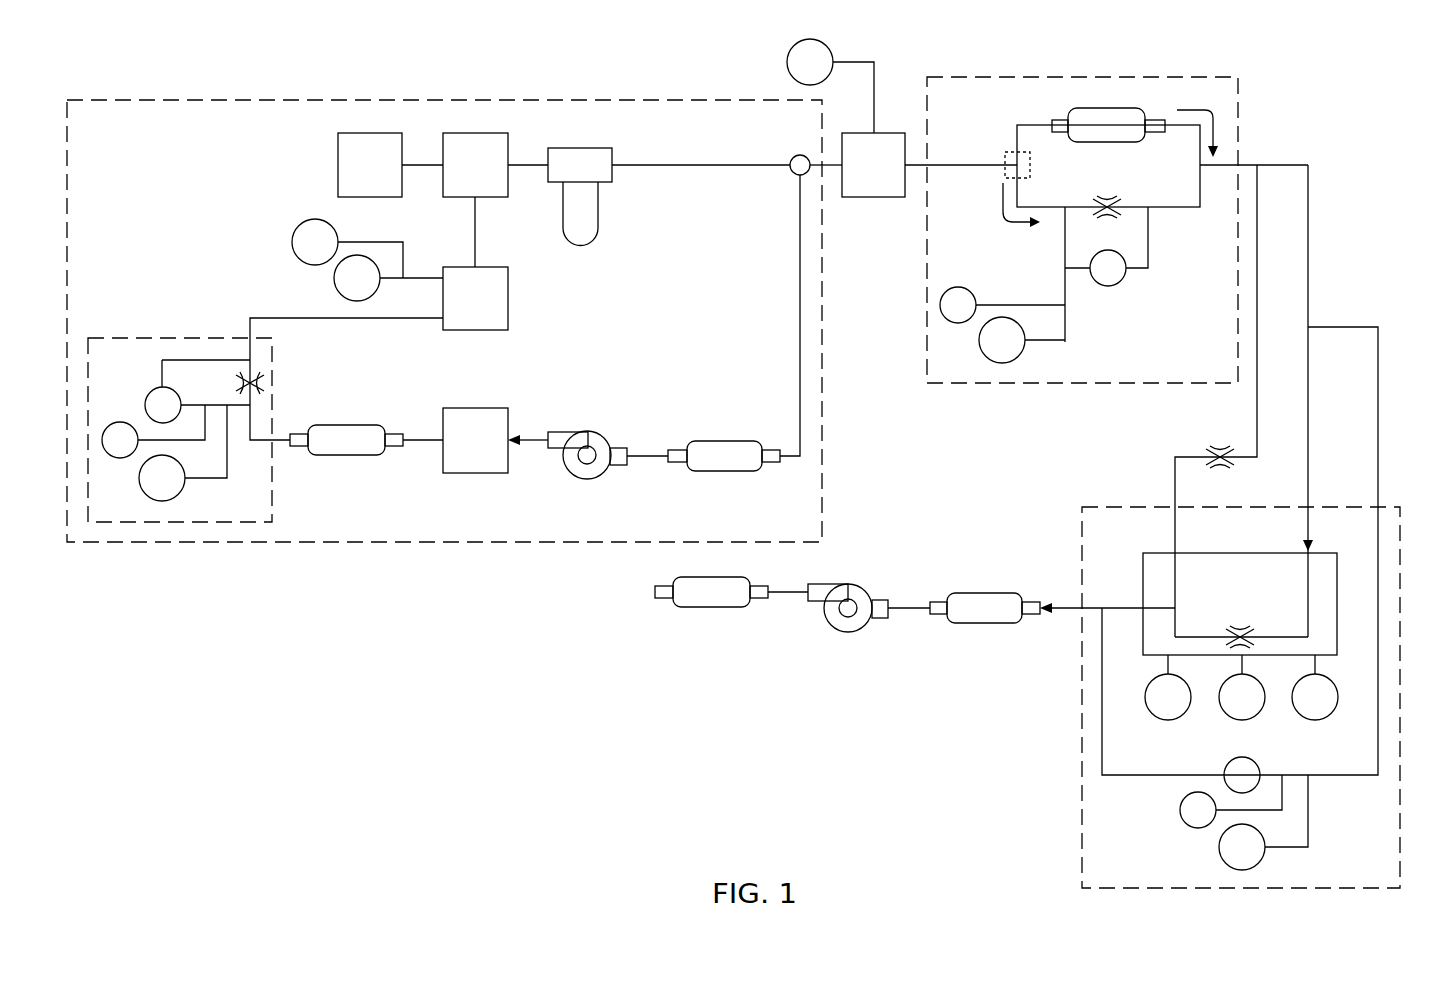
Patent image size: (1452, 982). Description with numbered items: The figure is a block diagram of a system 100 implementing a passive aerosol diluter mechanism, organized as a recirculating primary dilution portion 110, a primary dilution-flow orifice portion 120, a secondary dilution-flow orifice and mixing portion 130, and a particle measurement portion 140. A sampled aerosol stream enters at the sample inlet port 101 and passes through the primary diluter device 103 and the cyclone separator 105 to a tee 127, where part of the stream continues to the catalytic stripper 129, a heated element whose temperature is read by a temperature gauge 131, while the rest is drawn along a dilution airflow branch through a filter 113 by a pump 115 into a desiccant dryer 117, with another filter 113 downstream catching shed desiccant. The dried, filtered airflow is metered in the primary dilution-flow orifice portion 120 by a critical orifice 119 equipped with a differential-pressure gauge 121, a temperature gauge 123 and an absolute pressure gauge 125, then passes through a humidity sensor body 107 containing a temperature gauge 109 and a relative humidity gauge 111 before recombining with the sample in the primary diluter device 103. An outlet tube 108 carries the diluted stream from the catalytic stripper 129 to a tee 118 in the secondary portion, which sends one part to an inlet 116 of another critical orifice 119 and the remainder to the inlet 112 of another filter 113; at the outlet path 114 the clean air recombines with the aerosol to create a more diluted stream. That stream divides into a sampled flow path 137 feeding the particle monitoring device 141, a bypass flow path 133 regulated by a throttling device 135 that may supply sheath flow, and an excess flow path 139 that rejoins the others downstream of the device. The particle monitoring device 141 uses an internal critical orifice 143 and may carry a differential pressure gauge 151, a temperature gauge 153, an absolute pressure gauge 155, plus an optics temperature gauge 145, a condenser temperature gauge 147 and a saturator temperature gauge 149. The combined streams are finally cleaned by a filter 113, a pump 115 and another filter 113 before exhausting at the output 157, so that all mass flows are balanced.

The system 100 is at (142, 52).
The sample inlet port 101 is at (375, 133).
The primary diluter device 103 is at (478, 133).
The cyclone separator 105 is at (586, 148).
The humidity sensor body 107 is at (510, 297).
The outlet tube 108 is at (960, 163).
The temperature gauge 109 is at (312, 219).
The recirculating primary dilution portion 110 is at (445, 100).
The relative humidity gauge 111 is at (336, 284).
The inlet 112 is at (1036, 124).
The filter 113 is at (350, 426).
The outlet path 114 is at (1195, 152).
The pump 115 is at (590, 432).
The inlet 116 is at (1053, 210).
The desiccant dryer 117 is at (478, 408).
The tee 118 is at (1032, 166).
The critical orifice 119 is at (256, 383).
The primary dilution-flow orifice portion 120 is at (180, 338).
The differential-pressure gauge 121 is at (157, 390).
The temperature gauge 123 is at (120, 460).
The absolute pressure gauge 125 is at (175, 496).
The tee 127 is at (795, 156).
The catalytic stripper 129 is at (873, 197).
The secondary dilution-flow orifice and mixing portion 130 is at (1080, 77).
The temperature gauge 131 is at (787, 62).
The bypass flow path 133 is at (1259, 268).
The throttling device 135 is at (1220, 450).
The sampled flow path 137 is at (1309, 243).
The excess flow path 139 is at (1380, 390).
The particle measurement portion 140 is at (1240, 508).
The particle monitoring device 141 is at (1243, 553).
The critical orifice 143 is at (1240, 636).
The optics temperature gauge 145 is at (1165, 722).
The condenser temperature gauge 147 is at (1240, 722).
The saturator temperature gauge 149 is at (1315, 722).
The differential pressure gauge 151 is at (1240, 757).
The temperature gauge 153 is at (1186, 824).
The absolute pressure gauge 155 is at (1252, 863).
The output 157 is at (662, 598).